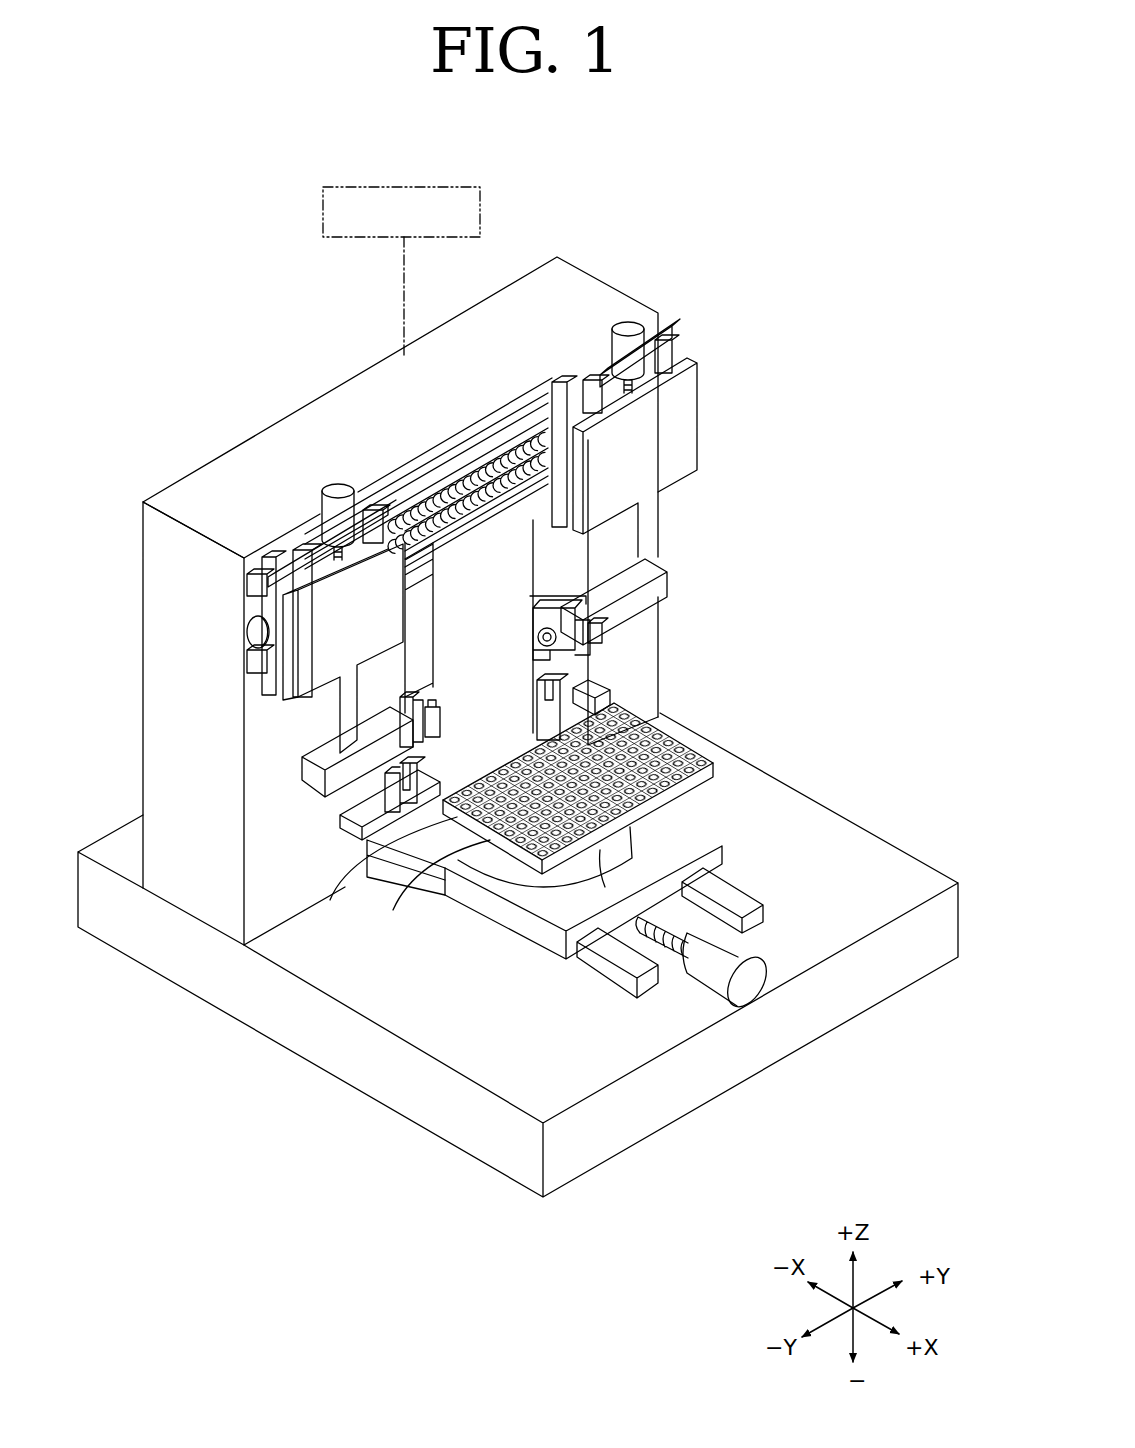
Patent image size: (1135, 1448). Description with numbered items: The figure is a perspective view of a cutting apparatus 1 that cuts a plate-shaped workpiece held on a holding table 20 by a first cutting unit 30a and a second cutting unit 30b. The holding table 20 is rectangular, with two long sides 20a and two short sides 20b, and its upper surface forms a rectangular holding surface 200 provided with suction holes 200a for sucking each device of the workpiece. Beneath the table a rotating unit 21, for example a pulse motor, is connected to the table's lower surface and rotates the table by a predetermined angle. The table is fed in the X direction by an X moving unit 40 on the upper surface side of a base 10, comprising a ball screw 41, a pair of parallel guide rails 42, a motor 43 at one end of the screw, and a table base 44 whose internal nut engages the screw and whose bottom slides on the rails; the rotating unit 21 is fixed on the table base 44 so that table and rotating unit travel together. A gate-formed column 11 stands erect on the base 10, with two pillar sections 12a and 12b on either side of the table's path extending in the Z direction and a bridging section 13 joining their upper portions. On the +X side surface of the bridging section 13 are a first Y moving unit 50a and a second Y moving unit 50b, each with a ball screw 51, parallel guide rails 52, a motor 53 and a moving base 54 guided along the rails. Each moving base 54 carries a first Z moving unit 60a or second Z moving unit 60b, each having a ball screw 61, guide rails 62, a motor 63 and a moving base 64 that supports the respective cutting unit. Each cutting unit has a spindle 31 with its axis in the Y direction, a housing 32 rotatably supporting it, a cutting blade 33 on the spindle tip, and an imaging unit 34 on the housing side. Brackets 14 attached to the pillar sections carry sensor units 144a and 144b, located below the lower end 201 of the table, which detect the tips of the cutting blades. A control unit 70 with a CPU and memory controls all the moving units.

The cutting apparatus 1 is at (305, 220).
The base 10 is at (370, 1086).
The gate-formed column 11 is at (212, 450).
The pillar section 12a is at (155, 700).
The pillar section 12b is at (655, 511).
The bridging section 13 is at (290, 427).
The bracket 14 is at (415, 560).
The holding table 20 is at (670, 715).
The long side 20a is at (643, 807).
The short side 20b is at (408, 805).
The rotating unit 21 is at (535, 920).
The first cutting unit 30a is at (243, 908).
The second cutting unit 30b is at (632, 630).
The spindle 31 is at (540, 643).
The housing 32 is at (290, 797).
The cutting blade 33 is at (527, 623).
The imaging unit 34 is at (403, 727).
The X moving unit 40 is at (595, 1000).
The ball screw 41 is at (677, 940).
The guide rails 42 is at (740, 897).
The motor 43 is at (747, 980).
The table base 44 is at (520, 925).
The first Y moving unit 50a is at (265, 533).
The second Y moving unit 50b is at (573, 347).
The ball screw 51 is at (487, 467).
The guide rails 52 is at (452, 473).
The motor 53 is at (247, 620).
The moving base 54 is at (303, 538).
The first Z moving unit 60a is at (253, 695).
The second Z moving unit 60b is at (686, 332).
The ball screw 61 is at (313, 484).
The guide rails 62 is at (250, 577).
The motor 63 is at (337, 484).
The moving base 64 is at (317, 673).
The control unit 70 is at (408, 186).
The sensor unit 144a is at (375, 805).
The sensor unit 144b is at (670, 733).
The holding surface 200 is at (690, 783).
The suction holes 200a is at (678, 793).
The lower end 201 is at (457, 813).